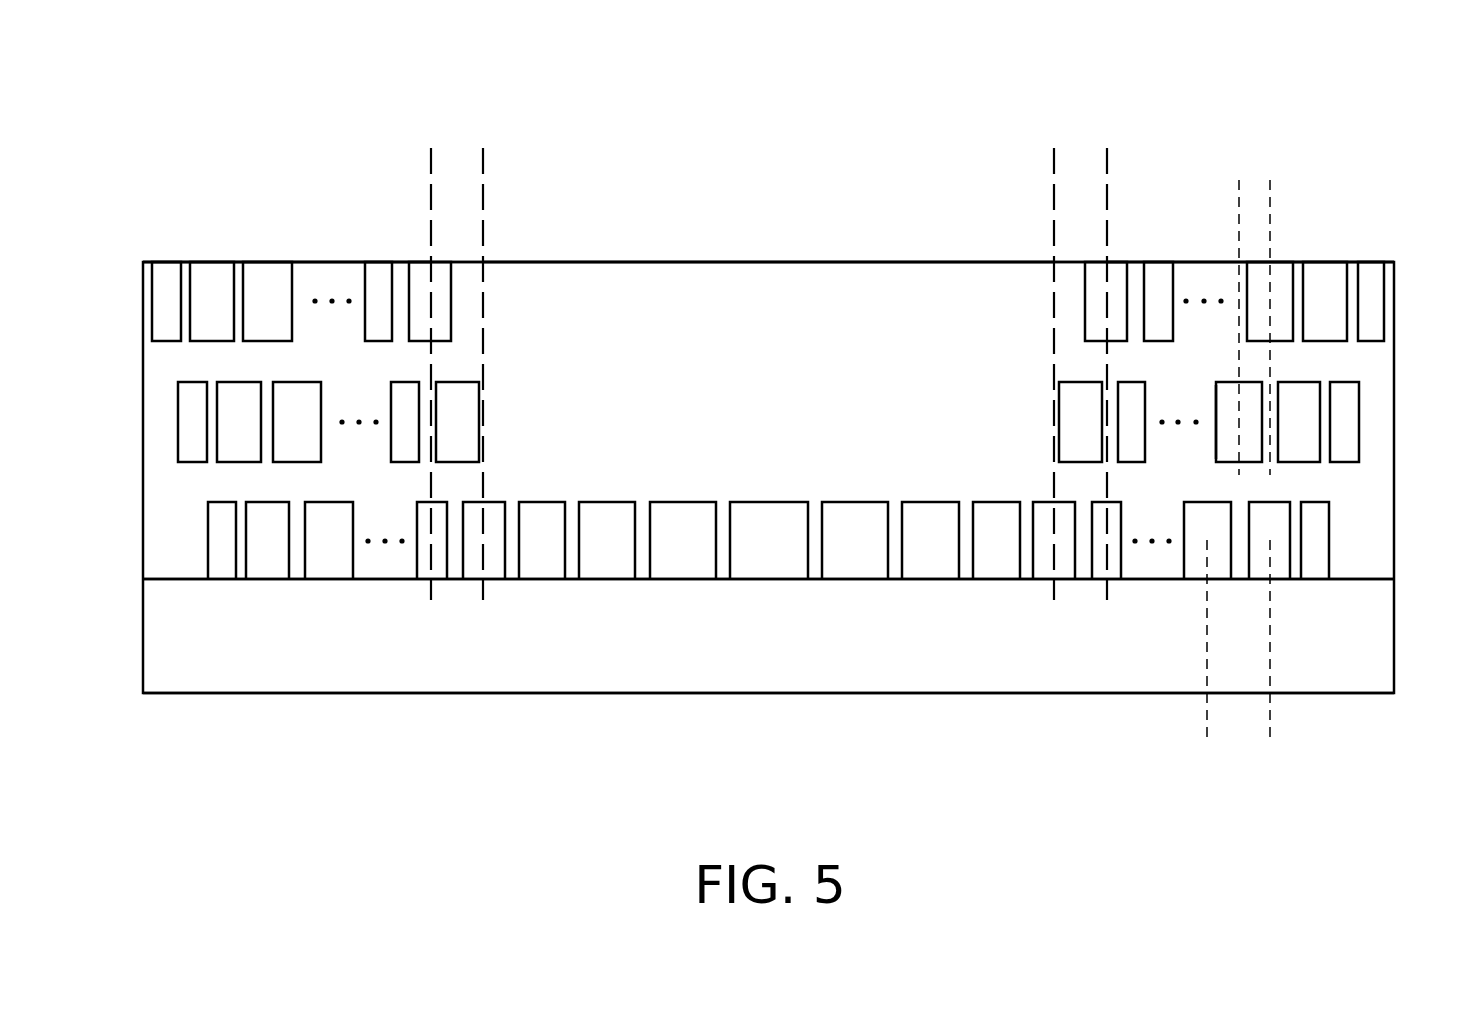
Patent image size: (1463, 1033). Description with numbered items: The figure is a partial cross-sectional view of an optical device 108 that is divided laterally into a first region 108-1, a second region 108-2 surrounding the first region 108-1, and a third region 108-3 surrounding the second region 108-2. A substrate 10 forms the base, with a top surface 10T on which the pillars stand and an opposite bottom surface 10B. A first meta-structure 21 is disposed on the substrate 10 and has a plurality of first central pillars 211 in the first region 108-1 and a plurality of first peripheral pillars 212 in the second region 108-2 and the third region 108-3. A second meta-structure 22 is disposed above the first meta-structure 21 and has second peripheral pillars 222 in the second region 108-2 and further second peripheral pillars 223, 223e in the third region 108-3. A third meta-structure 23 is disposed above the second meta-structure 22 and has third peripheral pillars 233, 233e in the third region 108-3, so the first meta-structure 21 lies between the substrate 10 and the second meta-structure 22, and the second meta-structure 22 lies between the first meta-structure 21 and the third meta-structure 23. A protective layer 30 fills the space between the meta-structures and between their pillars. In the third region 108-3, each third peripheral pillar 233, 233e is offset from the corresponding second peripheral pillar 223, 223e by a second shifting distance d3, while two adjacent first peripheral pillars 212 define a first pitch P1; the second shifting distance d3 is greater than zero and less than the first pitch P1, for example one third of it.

The optical device 108 is at (103, 53).
The first region 108-1 is at (769, 160).
The second region 108-2 is at (458, 160).
The third region 108-3 is at (330, 160).
The substrate 10 is at (155, 635).
The top surface of substrate 10T is at (377, 566).
The bottom surface of substrate 10B is at (434, 706).
The protective layer 30 is at (1394, 481).
The first meta-structure 21 is at (1408, 502).
The second meta-structure 22 is at (1408, 382).
The third meta-structure 23 is at (1408, 263).
The first central pillar 211 is at (768, 568).
The first peripheral pillar 212 is at (1198, 572).
The second peripheral pillar 222 is at (1087, 448).
The second peripheral pillar in third region 223 is at (1312, 447).
The second peripheral pillar 223e is at (1227, 447).
The third peripheral pillar 233 is at (1160, 273).
The third peripheral pillar 233e is at (1280, 272).
The second shifting distance d3 is at (1270, 175).
The first pitch P1 is at (1270, 742).